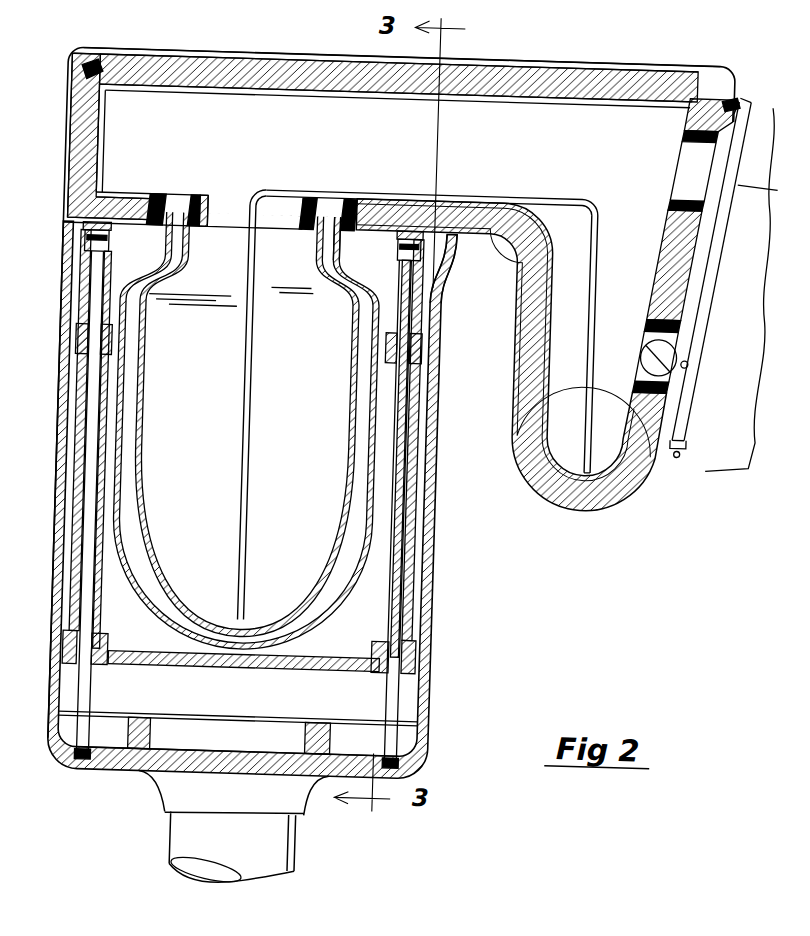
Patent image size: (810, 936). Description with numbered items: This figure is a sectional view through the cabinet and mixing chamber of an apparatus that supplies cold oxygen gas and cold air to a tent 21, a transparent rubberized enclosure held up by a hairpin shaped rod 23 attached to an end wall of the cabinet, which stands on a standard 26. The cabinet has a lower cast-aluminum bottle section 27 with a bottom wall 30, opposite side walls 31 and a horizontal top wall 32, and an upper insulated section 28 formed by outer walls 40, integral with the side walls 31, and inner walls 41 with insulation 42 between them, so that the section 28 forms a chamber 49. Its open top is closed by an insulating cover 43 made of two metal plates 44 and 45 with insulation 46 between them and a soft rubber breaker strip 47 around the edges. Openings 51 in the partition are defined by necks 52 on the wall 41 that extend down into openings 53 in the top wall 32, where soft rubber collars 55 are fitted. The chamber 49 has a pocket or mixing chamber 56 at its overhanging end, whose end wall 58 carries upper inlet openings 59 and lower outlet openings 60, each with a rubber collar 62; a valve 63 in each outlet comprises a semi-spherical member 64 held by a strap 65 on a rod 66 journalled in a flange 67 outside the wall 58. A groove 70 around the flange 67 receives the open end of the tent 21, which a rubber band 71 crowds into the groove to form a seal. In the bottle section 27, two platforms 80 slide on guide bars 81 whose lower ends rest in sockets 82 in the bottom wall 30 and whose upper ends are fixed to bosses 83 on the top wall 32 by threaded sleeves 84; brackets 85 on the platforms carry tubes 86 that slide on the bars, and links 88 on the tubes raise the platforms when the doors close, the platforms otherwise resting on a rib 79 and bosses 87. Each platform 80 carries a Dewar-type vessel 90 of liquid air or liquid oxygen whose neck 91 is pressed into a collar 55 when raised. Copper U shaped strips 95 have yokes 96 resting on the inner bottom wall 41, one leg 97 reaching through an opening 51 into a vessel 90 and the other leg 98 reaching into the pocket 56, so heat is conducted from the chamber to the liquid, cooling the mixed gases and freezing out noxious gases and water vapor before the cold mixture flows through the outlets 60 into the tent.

The tent 21 is at (719, 446).
The hairpin shaped rod 23 is at (753, 163).
The standard 26 is at (285, 834).
The bottle section 27 is at (447, 287).
The insulated section 28 is at (549, 104).
The bottom wall 30 is at (293, 752).
The side walls 31 is at (71, 435).
The horizontal wall 32 is at (127, 220).
The outer walls 40 is at (72, 131).
The inner walls 41 is at (110, 129).
The insulation 42 is at (93, 167).
The insulating cover 43 is at (338, 45).
The metal plate 44 is at (224, 45).
The metal plate 45 is at (231, 83).
The insulation 46 is at (340, 70).
The insulating breaker strip 47 is at (712, 74).
The chamber 49 is at (474, 156).
The openings 51 is at (251, 193).
The necks 52 is at (212, 222).
The openings 53 is at (171, 212).
The soft rubber collars 55 is at (311, 215).
The pocket 56 is at (618, 291).
The end wall 58 is at (684, 202).
The openings 59 is at (695, 155).
The openings 60 is at (676, 358).
The rubber collar 62 is at (712, 185).
The valves 63 is at (662, 330).
The semi-spherical member 64 is at (660, 340).
The strap 65 is at (700, 341).
The rod 66 is at (699, 347).
The flange 67 is at (697, 385).
The groove 70 is at (700, 418).
The rubber band 71 is at (690, 437).
The rib 79 is at (377, 729).
The platforms 80 is at (265, 653).
The guide bars 81 is at (102, 680).
The socket 82 is at (113, 752).
The boss 83 is at (96, 230).
The threaded sleeve 84 is at (99, 245).
The brackets 85 is at (90, 648).
The tube 86 is at (92, 386).
The bosses 87 is at (170, 726).
The link 88 is at (88, 340).
The vessel 90 is at (384, 609).
The necks 91 is at (349, 229).
The U shaped strips 95 is at (264, 352).
The yokes 96 is at (394, 188).
The leg 97 is at (264, 432).
The leg 98 is at (606, 244).